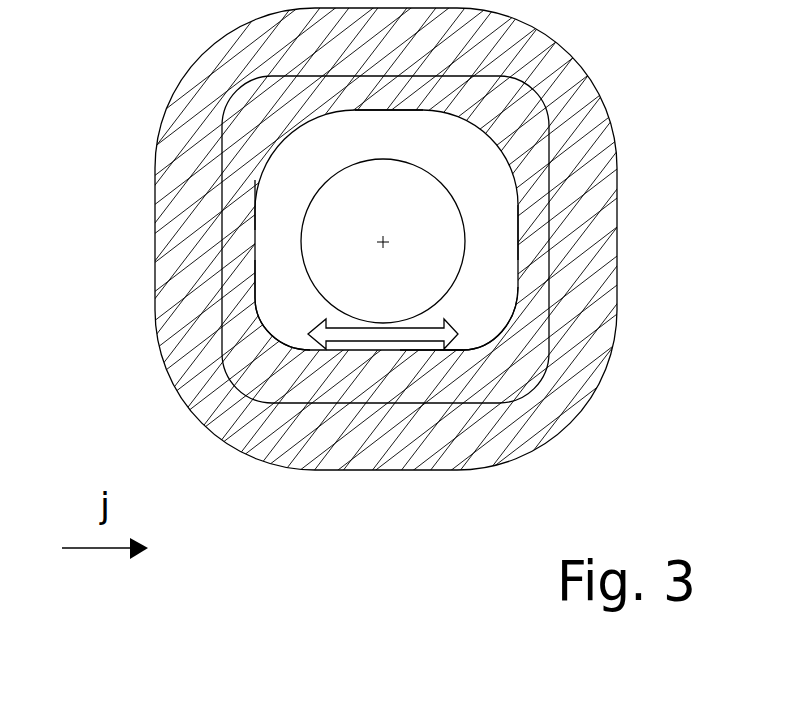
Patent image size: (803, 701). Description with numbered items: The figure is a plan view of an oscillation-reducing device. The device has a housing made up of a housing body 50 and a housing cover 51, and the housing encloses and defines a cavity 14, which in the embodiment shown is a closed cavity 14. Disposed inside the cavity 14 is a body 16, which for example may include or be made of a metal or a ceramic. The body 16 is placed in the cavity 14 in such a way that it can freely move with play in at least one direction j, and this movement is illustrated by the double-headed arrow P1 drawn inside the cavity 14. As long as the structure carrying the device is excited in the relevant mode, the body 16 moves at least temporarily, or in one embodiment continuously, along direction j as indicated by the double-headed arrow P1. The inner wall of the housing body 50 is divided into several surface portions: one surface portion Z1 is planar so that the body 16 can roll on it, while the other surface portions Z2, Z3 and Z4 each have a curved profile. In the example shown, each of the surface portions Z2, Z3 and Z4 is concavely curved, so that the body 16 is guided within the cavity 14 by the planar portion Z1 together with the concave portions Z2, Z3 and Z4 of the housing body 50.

The cavity 14 is at (283, 283).
The body 16 is at (540, 306).
The housing body 50 is at (578, 213).
The housing cover 51 is at (438, 377).
The double-headed arrow P1 is at (343, 330).
The planar surface portion Z1 is at (467, 336).
The curved surface portion Z2 is at (272, 204).
The curved surface portion Z3 is at (357, 113).
The curved surface portion Z4 is at (507, 195).